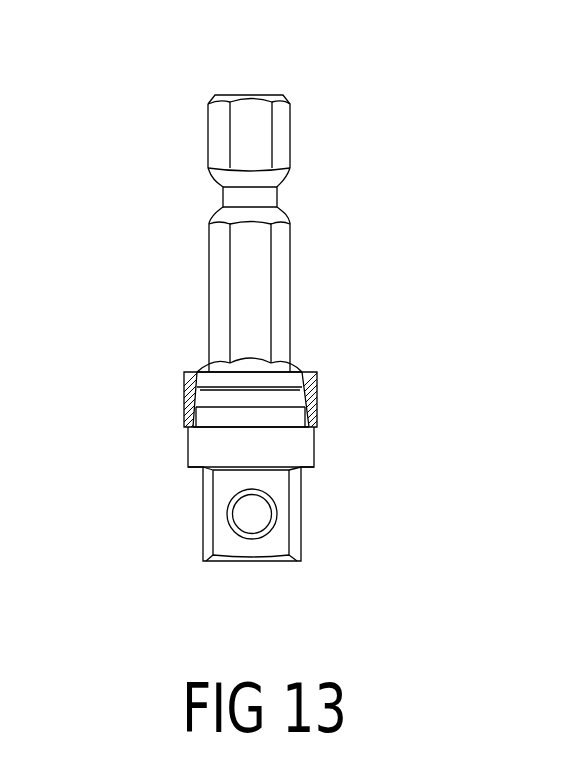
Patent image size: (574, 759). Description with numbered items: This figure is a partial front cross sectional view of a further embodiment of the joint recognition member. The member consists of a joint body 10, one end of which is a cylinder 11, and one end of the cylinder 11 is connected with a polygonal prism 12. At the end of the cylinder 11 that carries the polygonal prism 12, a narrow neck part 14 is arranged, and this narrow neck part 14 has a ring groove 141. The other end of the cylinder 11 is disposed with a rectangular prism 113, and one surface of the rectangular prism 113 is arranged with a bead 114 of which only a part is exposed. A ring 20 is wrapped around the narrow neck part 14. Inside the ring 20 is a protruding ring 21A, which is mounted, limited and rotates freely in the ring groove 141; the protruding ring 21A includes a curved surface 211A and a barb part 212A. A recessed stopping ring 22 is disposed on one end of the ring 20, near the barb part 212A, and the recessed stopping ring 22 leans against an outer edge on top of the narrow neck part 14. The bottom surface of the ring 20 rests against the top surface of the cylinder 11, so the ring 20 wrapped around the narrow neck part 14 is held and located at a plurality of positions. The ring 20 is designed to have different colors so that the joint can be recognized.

The joint body 10 is at (308, 212).
The polygonal prism 12 is at (248, 253).
The recessed stopping ring 22 is at (302, 368).
The ring 20 is at (312, 396).
The narrow neck part 14 is at (302, 383).
The ring groove 141 is at (242, 403).
The barb part 212A is at (197, 372).
The curved surface 211A is at (213, 410).
The protruding ring 21A is at (270, 418).
The cylinder 11 is at (268, 448).
The bead 114 is at (252, 514).
The rectangular prism 113 is at (300, 515).